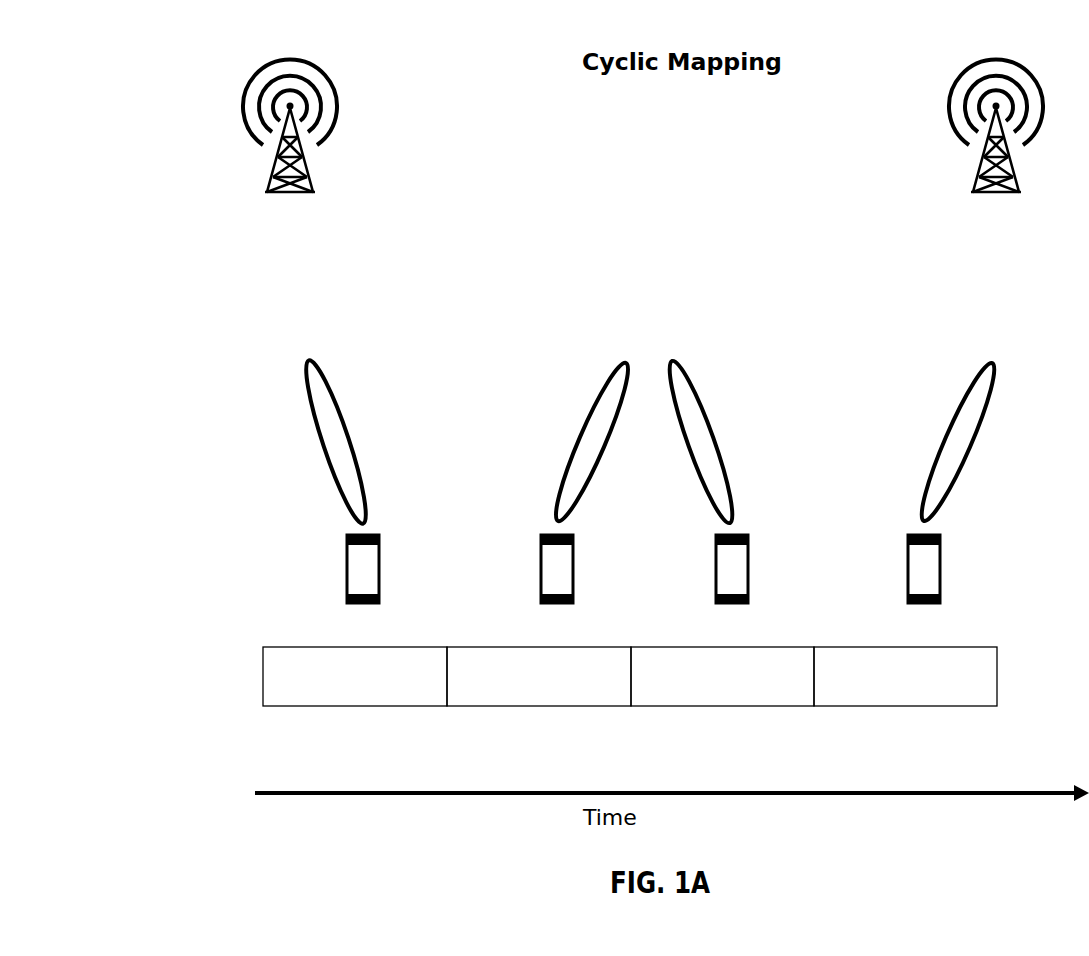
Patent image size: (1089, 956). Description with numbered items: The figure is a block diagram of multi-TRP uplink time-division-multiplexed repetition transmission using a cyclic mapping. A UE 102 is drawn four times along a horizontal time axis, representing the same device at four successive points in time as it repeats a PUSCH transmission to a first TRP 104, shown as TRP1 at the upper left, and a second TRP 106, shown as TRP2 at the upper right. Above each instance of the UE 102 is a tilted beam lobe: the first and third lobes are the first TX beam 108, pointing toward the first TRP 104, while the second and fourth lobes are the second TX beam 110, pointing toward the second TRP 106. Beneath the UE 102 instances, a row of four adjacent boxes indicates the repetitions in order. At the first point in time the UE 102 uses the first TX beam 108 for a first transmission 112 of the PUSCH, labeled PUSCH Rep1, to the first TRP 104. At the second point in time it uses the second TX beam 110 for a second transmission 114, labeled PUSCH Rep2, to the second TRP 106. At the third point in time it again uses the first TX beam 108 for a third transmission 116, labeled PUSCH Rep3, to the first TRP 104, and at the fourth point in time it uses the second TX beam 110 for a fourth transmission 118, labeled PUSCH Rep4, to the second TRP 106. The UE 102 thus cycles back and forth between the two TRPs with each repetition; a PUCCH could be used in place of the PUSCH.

The UE 102 is at (347, 538).
The first TRP 104 is at (276, 162).
The second TRP 106 is at (982, 162).
The first TX beam 108 is at (316, 423).
The second TX beam 110 is at (588, 413).
The first transmission 112 is at (312, 707).
The second transmission 114 is at (492, 707).
The third transmission 116 is at (695, 707).
The fourth transmission 118 is at (897, 707).